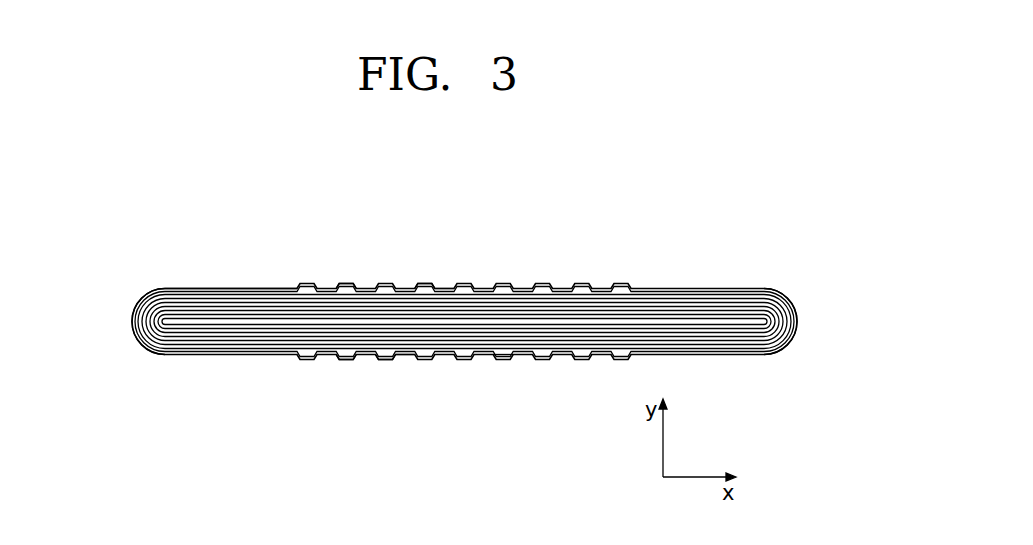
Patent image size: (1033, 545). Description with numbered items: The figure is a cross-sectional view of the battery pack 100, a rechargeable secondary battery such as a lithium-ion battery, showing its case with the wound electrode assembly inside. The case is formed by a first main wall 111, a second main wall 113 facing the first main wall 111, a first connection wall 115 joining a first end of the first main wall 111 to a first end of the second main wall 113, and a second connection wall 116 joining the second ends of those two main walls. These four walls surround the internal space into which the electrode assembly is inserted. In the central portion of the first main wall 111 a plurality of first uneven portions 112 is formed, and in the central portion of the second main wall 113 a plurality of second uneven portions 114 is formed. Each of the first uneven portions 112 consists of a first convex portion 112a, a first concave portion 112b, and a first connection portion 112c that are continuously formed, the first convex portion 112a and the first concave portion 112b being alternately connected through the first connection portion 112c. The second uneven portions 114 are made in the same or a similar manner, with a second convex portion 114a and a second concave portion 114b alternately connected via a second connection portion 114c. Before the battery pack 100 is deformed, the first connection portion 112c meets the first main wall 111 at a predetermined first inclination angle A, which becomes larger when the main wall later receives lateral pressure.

The battery pack 100 is at (682, 207).
The first main wall 111 is at (210, 354).
The first uneven portions 112 is at (335, 359).
The first convex portion 112a is at (385, 360).
The first concave portion 112b is at (405, 358).
The first connection portion 112c is at (398, 358).
The second main wall 113 is at (222, 287).
The second uneven portions 114 is at (343, 284).
The second convex portion 114a is at (425, 285).
The second concave portion 114b is at (450, 287).
The second connection portion 114c is at (437, 284).
The first connection wall 115 is at (134, 338).
The second connection wall 116 is at (798, 322).
The first inclination angle A is at (495, 358).